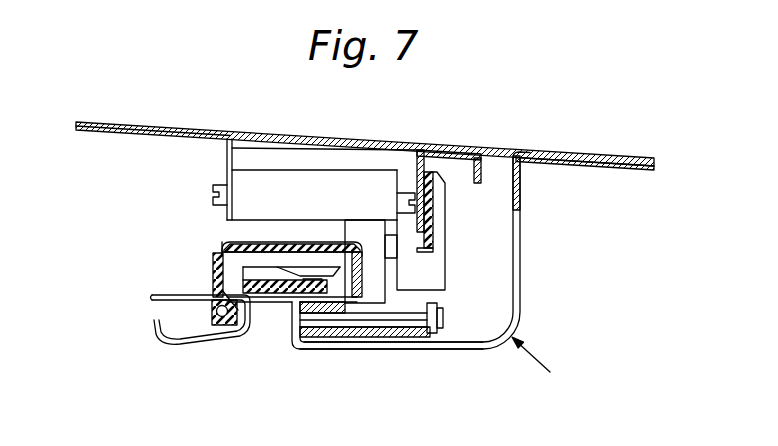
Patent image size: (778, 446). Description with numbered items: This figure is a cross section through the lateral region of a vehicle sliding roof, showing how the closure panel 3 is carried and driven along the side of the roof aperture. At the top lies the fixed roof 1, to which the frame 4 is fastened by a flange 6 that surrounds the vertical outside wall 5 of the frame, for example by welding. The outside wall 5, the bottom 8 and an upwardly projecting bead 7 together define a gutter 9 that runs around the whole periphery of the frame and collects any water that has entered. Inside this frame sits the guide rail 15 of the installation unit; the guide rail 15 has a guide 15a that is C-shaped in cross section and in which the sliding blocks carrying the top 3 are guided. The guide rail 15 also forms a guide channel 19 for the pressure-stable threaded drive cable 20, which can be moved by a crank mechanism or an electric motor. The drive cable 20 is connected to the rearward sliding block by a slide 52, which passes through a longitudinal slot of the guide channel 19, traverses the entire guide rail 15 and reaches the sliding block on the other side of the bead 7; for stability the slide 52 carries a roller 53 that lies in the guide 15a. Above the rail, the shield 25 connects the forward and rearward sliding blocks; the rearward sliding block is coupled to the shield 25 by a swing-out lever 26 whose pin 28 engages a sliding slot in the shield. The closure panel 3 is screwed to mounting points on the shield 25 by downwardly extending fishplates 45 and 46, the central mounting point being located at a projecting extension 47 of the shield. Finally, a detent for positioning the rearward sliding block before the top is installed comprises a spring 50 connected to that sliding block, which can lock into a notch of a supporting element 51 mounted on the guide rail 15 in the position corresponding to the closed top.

The roof 1 is at (595, 157).
The closure panel 3 is at (185, 126).
The frame 4 is at (535, 363).
The outside wall 5 is at (521, 234).
The flange 6 is at (603, 169).
The bead 7 is at (268, 303).
The bottom 8 is at (427, 348).
The gutter 9 is at (467, 327).
The guide rail 15 is at (183, 302).
The guide 15a is at (327, 349).
The guide channel 19 is at (210, 326).
The drive cable 20 is at (223, 318).
The shield 25 is at (438, 226).
The swing-out lever 26 is at (373, 300).
The pin 28 is at (392, 245).
The fishplate 45 is at (233, 157).
The fishplate 46 is at (426, 152).
The projecting extension 47 is at (343, 180).
The spring 50 is at (318, 272).
The supporting element 51 is at (243, 282).
The slide 52 is at (240, 244).
The roller 53 is at (352, 340).